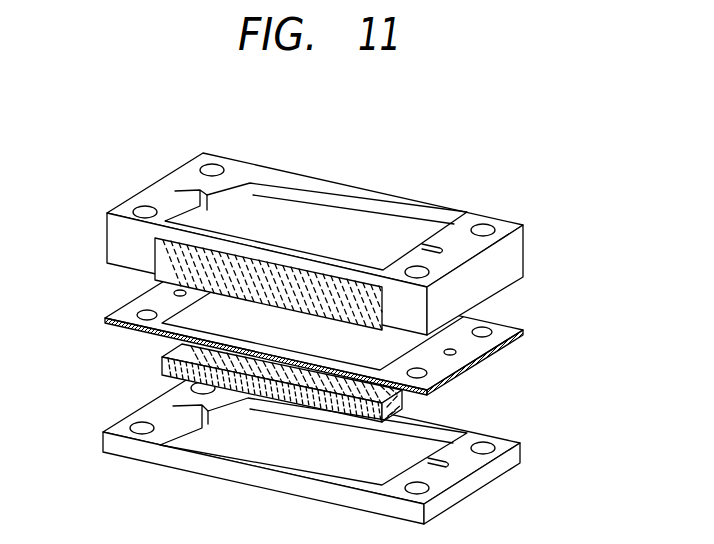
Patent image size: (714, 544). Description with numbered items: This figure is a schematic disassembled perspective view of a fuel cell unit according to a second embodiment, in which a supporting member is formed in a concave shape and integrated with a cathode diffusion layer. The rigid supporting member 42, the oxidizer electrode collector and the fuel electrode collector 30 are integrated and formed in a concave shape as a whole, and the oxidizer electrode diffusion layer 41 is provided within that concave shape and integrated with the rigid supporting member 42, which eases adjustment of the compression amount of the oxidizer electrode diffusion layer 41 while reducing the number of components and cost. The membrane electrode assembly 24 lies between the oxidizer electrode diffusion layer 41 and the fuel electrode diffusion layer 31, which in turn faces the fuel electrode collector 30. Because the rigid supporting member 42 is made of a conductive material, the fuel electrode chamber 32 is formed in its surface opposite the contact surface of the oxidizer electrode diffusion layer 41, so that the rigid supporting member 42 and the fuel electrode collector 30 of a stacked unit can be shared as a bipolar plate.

The fuel electrode collector 30 is at (473, 468).
The rigid supporting member 42 is at (505, 255).
The oxidizer electrode diffusion layer 41 is at (150, 262).
The membrane electrode assembly 24 is at (508, 322).
The fuel electrode diffusion layer 31 is at (397, 408).
The fuel electrode chamber 32 is at (306, 216).